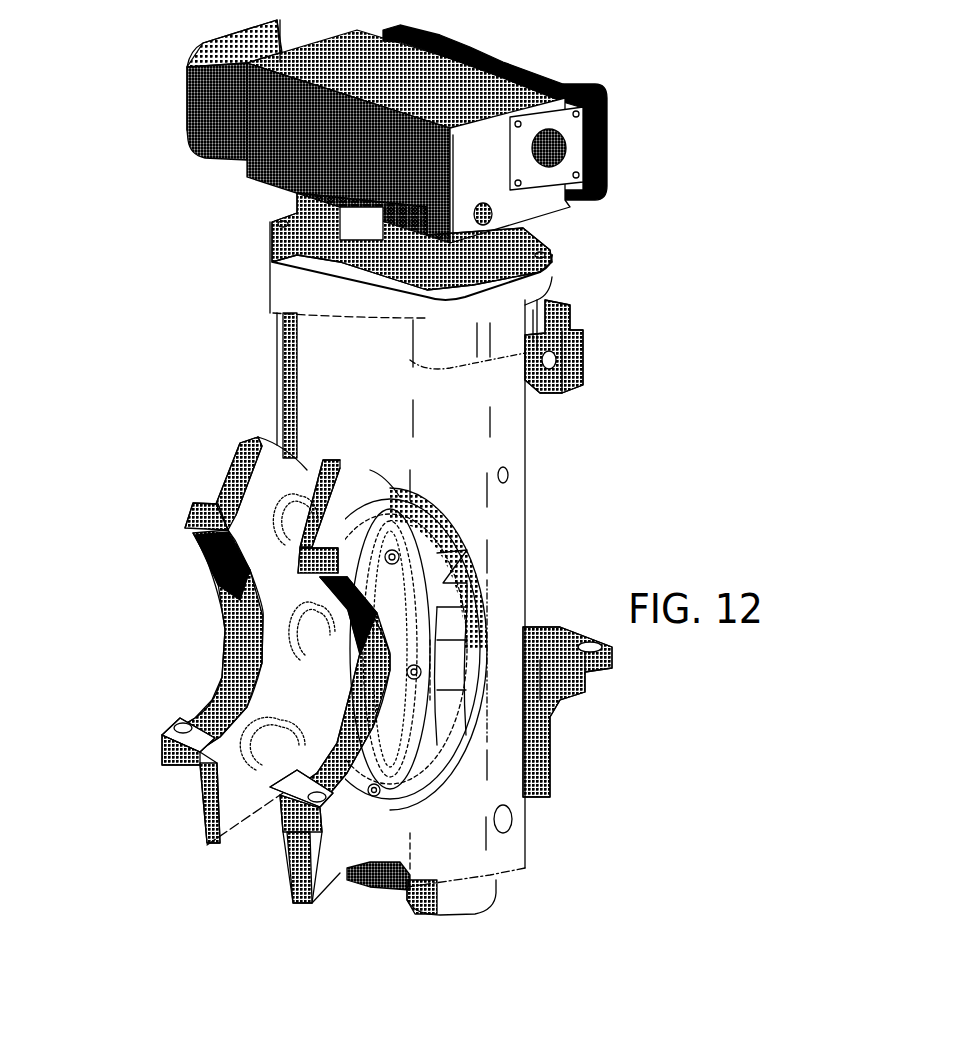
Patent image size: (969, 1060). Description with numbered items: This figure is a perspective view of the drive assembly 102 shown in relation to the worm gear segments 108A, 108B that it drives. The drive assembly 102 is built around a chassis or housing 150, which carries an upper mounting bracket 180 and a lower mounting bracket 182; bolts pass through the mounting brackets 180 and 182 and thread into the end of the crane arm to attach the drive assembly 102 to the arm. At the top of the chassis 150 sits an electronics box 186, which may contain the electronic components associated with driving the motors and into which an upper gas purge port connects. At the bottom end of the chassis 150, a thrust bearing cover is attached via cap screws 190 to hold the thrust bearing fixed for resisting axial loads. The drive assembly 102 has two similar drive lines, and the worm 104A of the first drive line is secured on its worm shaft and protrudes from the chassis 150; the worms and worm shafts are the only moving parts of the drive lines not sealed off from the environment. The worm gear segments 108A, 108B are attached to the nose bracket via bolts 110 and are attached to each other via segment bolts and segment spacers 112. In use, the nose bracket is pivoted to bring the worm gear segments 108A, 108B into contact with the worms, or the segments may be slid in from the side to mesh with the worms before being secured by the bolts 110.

The drive assembly 102 is at (610, 305).
The worm 104A is at (455, 640).
The worm gear segment 108A is at (420, 548).
The worm gear segment 108B is at (200, 530).
The bolts 110 is at (423, 677).
The segment spacers 112 is at (320, 633).
The chassis 150 is at (512, 468).
The upper mounting bracket 180 is at (578, 390).
The lower mounting bracket 182 is at (606, 698).
The electronics box 186 is at (217, 115).
The cap screws 190 is at (607, 171).